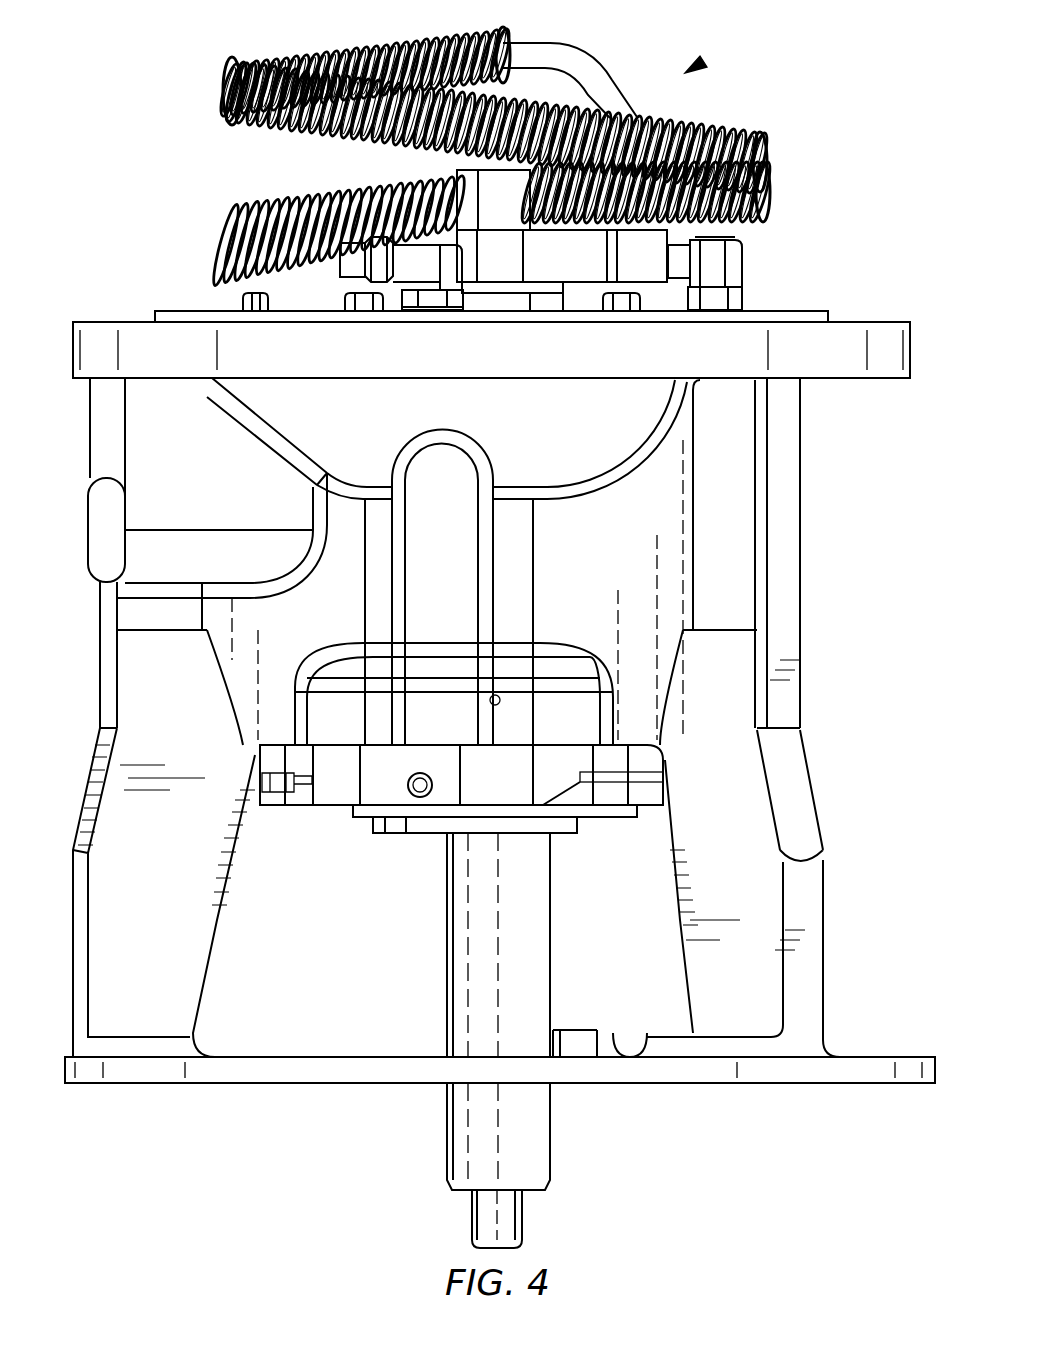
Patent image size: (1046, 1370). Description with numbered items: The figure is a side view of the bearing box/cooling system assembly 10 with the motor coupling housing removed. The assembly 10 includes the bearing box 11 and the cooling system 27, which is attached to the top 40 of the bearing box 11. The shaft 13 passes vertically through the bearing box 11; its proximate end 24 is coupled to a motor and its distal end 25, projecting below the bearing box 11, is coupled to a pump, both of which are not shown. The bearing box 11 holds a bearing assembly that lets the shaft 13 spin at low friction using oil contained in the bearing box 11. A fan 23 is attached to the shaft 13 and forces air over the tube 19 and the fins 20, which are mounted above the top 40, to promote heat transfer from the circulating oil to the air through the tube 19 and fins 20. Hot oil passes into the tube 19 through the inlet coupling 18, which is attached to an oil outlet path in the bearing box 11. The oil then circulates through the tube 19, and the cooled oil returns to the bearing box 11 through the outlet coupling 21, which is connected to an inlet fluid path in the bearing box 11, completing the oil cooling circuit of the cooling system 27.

The bearing box/cooling system assembly 10 is at (148, 19).
The bearing box 11 is at (803, 522).
The motor shaft 13 is at (447, 935).
The inlet coupling 18 is at (411, 275).
The tube 19 is at (600, 60).
The fins 20 is at (685, 120).
The outlet coupling 21 is at (745, 268).
The fan 23 is at (670, 237).
The proximate end 24 is at (467, 176).
The distal end 25 is at (553, 1133).
The cooling system 27 is at (705, 62).
The top 40 is at (811, 311).